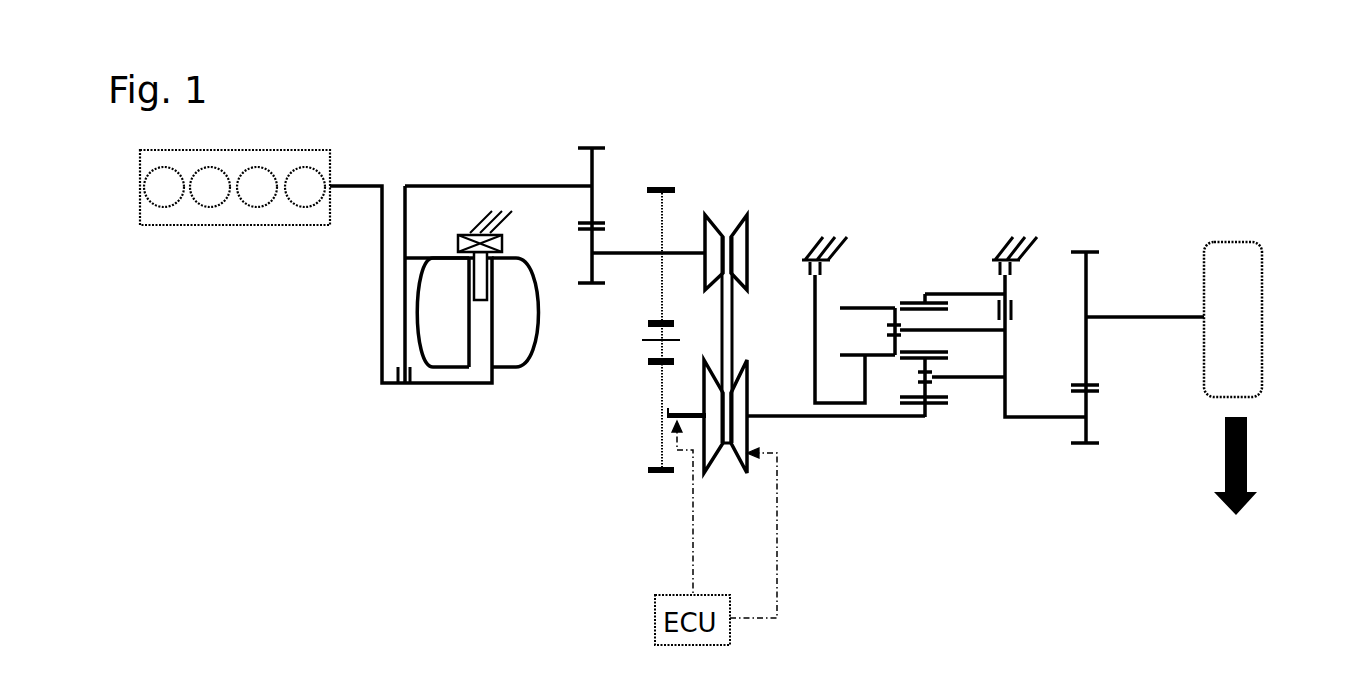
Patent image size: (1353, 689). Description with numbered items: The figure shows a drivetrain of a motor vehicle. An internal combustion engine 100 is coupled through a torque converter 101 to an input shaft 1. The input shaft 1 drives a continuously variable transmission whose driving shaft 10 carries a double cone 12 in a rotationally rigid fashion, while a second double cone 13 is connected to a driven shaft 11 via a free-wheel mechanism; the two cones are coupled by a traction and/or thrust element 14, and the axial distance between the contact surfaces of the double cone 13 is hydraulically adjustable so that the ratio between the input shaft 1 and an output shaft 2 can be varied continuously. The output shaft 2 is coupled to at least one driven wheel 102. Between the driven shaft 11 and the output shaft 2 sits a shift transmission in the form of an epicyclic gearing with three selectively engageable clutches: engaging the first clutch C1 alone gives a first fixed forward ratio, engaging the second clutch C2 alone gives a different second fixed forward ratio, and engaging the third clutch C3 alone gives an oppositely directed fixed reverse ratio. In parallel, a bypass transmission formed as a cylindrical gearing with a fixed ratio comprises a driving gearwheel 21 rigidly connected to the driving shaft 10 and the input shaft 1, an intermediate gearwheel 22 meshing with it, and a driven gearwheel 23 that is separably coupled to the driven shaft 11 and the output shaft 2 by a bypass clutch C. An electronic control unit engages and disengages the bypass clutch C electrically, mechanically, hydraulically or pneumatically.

The internal combustion engine 100 is at (246, 212).
The torque converter 101 is at (470, 411).
The input shaft 1 is at (502, 184).
The driving shaft 10 is at (682, 253).
The double cone 12 is at (740, 248).
The traction and/or thrust element 14 is at (733, 298).
The double cone 13 is at (747, 403).
The driven shaft 11 is at (793, 418).
The driving gearwheel 21 is at (660, 283).
The intermediate gearwheel 22 is at (660, 348).
The driven gearwheel 23 is at (660, 442).
The bypass clutch C is at (667, 408).
The first clutch C1 is at (820, 270).
The second clutch C2 is at (1012, 308).
The third clutch C3 is at (998, 273).
The output shaft 2 is at (1122, 318).
The driven wheel 102 is at (1230, 373).